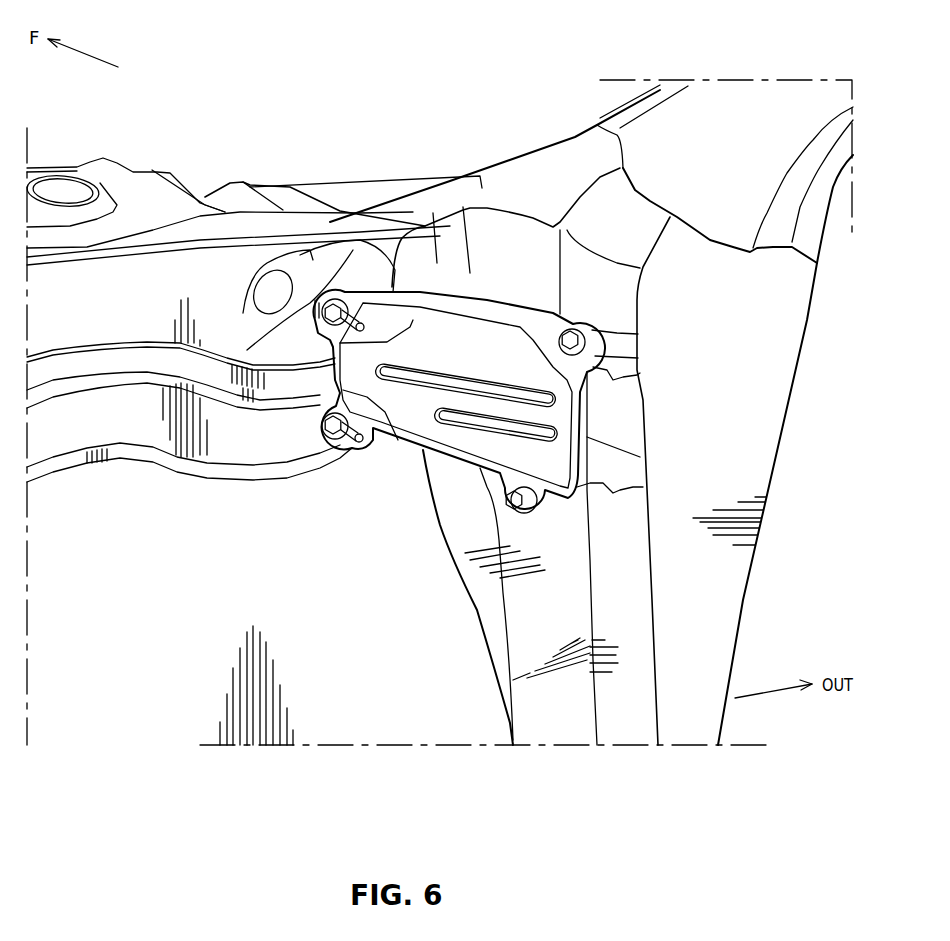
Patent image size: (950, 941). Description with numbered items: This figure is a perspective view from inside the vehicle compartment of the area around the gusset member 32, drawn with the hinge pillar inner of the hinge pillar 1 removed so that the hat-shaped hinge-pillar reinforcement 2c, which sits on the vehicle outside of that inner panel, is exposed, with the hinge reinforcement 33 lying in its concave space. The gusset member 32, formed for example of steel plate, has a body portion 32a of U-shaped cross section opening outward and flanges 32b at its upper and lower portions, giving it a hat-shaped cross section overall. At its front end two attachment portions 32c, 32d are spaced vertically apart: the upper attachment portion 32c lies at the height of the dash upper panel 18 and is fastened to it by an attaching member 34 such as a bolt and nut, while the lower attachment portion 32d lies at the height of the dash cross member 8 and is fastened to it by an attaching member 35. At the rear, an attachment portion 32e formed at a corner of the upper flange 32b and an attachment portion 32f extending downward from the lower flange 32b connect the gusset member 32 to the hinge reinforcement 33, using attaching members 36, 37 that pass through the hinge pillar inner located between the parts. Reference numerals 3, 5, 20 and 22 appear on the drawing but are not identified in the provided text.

The hinge pillar 1 is at (575, 138).
The hinge-pillar reinforcement 2c is at (550, 180).
The vehicle body side portion 3 is at (365, 730).
The roof / pillar upper portion 5 is at (733, 108).
The dash cross member 8 is at (160, 460).
The dash upper panel 18 is at (243, 257).
The dash upper panel 20 is at (128, 177).
The reinforcement member 22 is at (327, 193).
The gusset member 32 is at (486, 370).
The body portion 32a is at (460, 442).
The flanges 32b is at (492, 310).
The upper attachment portion 32c is at (337, 290).
The lower attachment portion 32d is at (313, 437).
The attachment portion 32e is at (578, 317).
The attachment portion 32f is at (540, 510).
The hinge reinforcement 33 is at (633, 408).
The attaching member 34 is at (360, 300).
The attaching member 35 is at (335, 443).
The attaching member 36 is at (590, 322).
The attaching member 37 is at (505, 503).